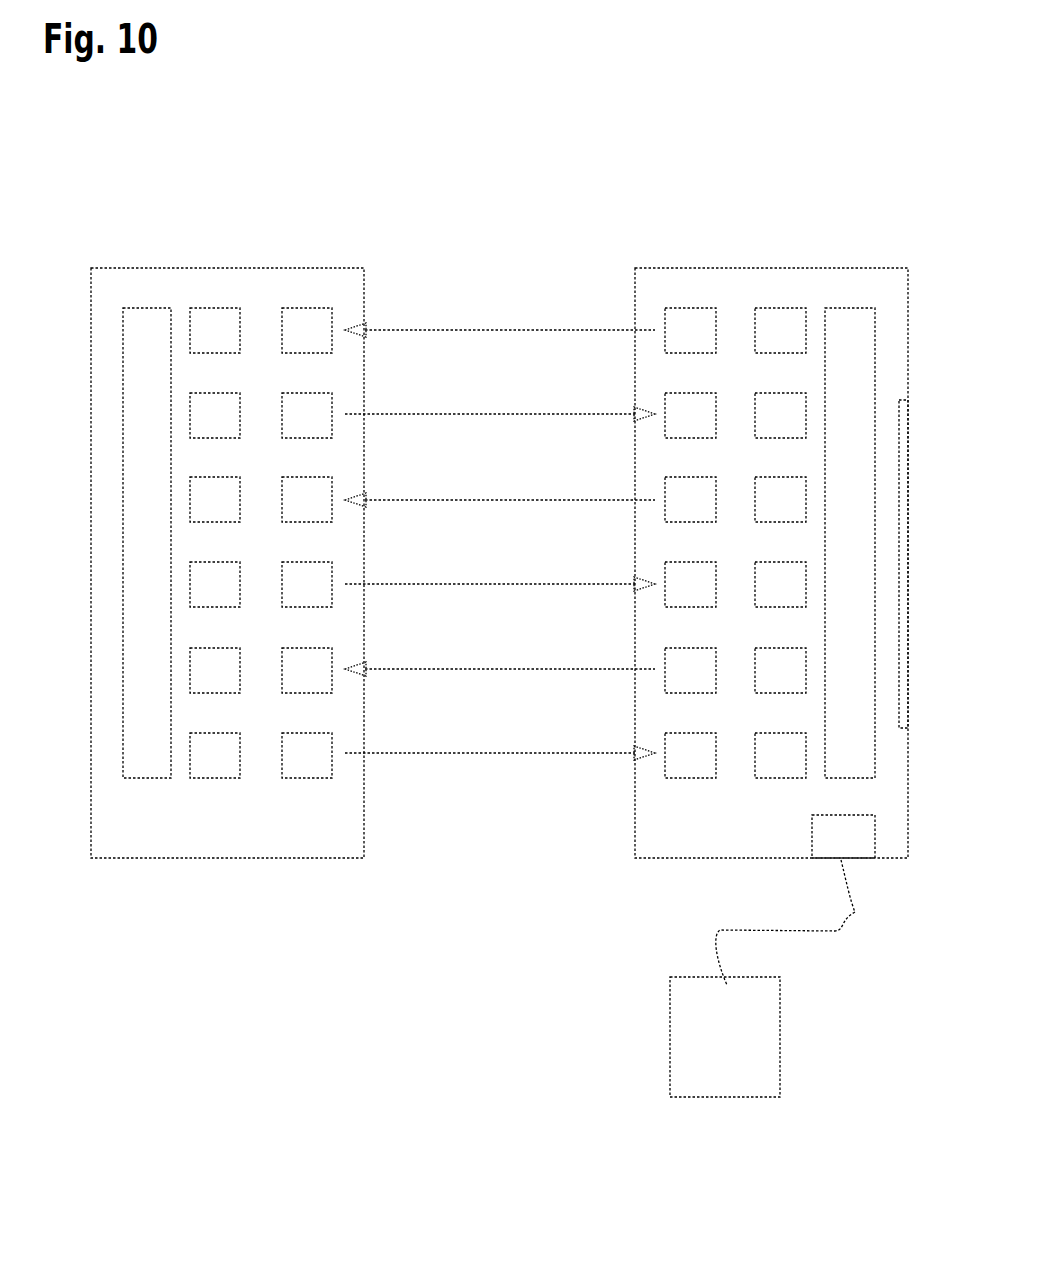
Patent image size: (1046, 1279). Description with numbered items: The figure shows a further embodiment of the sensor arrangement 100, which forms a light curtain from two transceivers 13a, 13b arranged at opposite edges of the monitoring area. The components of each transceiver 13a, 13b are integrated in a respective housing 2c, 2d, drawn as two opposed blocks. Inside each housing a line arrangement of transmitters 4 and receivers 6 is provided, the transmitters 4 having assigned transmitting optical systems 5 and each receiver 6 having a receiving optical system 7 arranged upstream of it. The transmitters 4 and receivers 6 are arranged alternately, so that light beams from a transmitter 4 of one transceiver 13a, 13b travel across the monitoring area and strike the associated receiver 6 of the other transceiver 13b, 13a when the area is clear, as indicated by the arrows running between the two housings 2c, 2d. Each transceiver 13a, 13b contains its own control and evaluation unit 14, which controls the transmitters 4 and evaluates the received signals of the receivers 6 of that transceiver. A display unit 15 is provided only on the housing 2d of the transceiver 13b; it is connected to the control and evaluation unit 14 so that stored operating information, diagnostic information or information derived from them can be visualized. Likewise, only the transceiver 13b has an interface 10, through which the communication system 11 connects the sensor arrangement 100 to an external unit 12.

The sensor arrangement 100 is at (236, 1004).
The housing 2c is at (143, 268).
The housing 2d is at (857, 268).
The transceiver 13a is at (256, 247).
The transceiver 13b is at (741, 247).
The control and evaluation unit 14 is at (162, 553).
The display unit 15 is at (905, 562).
The transmitter 4 is at (223, 429).
The transmitting optical system 5 is at (315, 429).
The receiver 6 is at (223, 344).
The receiving optical system 7 is at (315, 344).
The interface 10 is at (858, 850).
The communication system 11 is at (855, 912).
The external unit 12 is at (740, 1050).